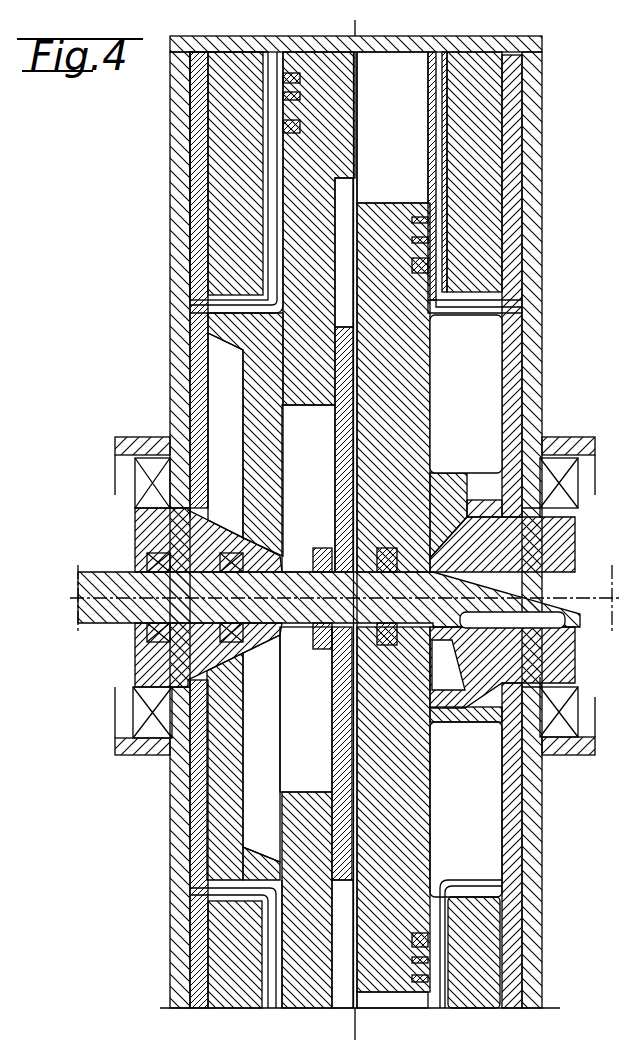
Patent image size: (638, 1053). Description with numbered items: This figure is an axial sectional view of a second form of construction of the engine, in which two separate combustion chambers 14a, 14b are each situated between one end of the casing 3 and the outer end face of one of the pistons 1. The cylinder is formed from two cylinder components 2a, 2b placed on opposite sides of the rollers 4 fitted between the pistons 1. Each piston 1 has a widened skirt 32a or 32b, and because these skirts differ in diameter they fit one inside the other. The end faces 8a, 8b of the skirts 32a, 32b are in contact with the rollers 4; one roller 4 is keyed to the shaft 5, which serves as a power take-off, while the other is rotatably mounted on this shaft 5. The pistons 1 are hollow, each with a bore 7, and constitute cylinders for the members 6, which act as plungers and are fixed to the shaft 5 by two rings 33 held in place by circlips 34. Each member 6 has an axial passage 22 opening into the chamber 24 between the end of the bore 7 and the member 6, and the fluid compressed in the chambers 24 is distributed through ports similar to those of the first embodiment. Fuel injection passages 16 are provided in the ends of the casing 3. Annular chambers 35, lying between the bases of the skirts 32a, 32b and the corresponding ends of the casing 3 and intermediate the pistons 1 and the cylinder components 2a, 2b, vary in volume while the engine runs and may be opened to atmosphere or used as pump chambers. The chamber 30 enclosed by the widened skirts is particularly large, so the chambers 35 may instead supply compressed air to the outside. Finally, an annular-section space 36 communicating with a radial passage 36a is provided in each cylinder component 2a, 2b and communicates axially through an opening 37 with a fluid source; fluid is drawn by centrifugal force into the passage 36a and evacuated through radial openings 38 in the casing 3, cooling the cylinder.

The piston 1 is at (322, 102).
The cylinder component 2a is at (200, 160).
The cylinder component 2b is at (200, 860).
The casing 3 is at (533, 192).
The roller 4 is at (553, 552).
The shaft 5 is at (583, 612).
The guide member 6 is at (342, 370).
The bore 7 is at (332, 245).
The end face of skirt 8a is at (253, 543).
The end face of skirt 8b is at (477, 522).
The combustion chamber 14a is at (392, 127).
The combustion chamber 14b is at (383, 997).
The fuel injection passage 16 is at (358, 40).
The axial passage 22 is at (355, 762).
The chamber 24 is at (347, 937).
The chamber 30 is at (305, 708).
The widened skirt 32a is at (263, 430).
The widened skirt 32b is at (228, 833).
The ring 33 is at (400, 555).
The circlip 34 is at (477, 605).
The annular chamber 35 is at (480, 341).
The annular-section space 36 is at (440, 960).
The radial passage 36a is at (468, 893).
The opening 37 is at (437, 55).
The radial opening 38 is at (172, 890).